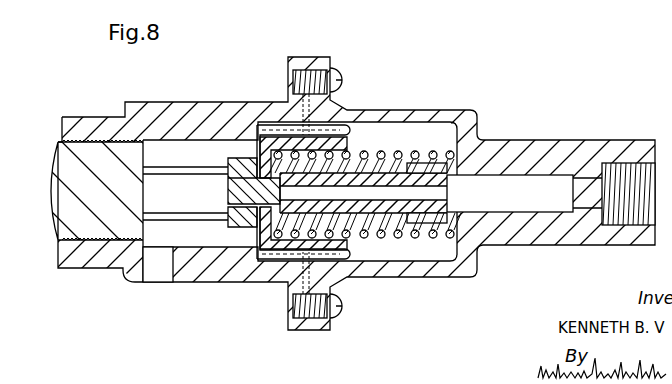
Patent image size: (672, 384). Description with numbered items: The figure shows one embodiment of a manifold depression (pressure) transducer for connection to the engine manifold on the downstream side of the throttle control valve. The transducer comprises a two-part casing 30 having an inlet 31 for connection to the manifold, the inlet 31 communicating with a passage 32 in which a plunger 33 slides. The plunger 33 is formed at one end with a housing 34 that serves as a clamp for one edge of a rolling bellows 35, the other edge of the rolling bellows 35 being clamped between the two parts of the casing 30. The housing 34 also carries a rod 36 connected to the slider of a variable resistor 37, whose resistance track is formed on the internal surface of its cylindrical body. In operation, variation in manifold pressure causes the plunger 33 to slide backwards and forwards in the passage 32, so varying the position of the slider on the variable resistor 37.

The two-part casing 30 is at (522, 148).
The inlet 31 is at (636, 218).
The passage 32 is at (538, 199).
The plunger 33 is at (397, 210).
The housing 34 is at (245, 250).
The rolling bellows 35 is at (283, 131).
The rod 36 is at (190, 197).
The variable resistor 37 is at (84, 148).